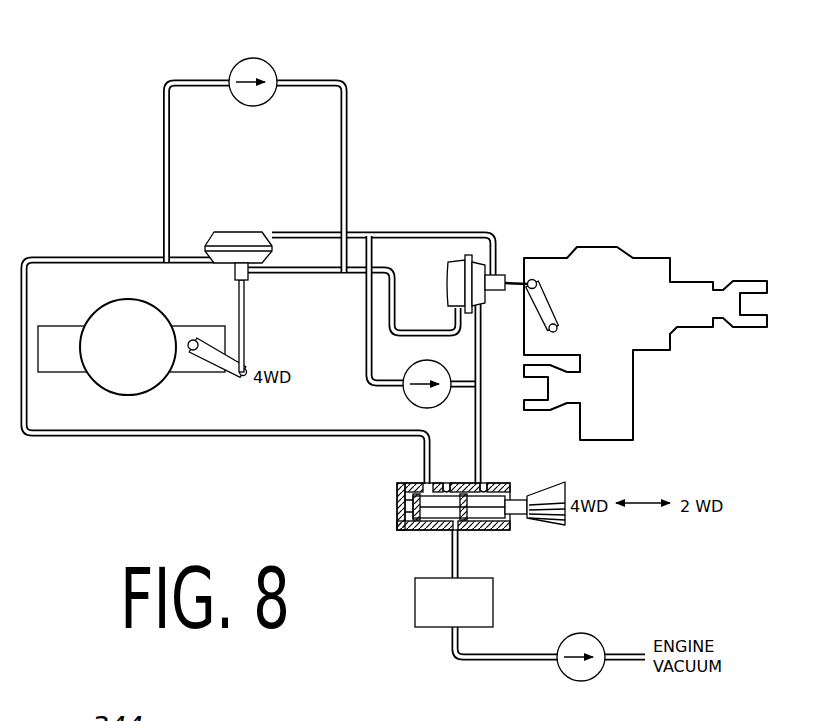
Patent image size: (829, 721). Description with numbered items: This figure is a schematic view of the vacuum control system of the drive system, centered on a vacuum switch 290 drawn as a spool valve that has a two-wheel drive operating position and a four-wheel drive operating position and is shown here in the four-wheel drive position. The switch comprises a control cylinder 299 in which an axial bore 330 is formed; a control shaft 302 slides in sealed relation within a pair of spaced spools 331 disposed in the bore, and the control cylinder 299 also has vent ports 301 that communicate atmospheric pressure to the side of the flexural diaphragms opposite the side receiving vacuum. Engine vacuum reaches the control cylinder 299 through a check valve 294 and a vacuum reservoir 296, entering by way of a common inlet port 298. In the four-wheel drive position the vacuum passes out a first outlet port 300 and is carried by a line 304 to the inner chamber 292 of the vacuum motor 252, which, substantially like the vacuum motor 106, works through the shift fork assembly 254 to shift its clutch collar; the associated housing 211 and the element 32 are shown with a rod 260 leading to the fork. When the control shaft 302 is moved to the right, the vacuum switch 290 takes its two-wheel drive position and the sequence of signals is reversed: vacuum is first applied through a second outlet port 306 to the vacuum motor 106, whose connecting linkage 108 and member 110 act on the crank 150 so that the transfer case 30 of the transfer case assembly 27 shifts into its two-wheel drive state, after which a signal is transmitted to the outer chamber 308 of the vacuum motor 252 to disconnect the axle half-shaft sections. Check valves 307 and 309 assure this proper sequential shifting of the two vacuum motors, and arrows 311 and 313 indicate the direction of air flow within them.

The transfer case assembly 27 is at (585, 176).
The transfer case 30 is at (622, 245).
The front axle disconnect 32 is at (138, 288).
The vacuum motor 106 is at (455, 258).
The connecting linkage 108 is at (514, 268).
The rod connector 110 is at (497, 291).
The crank 150 is at (549, 318).
The axle disconnect housing 211 is at (140, 190).
The vacuum motor 252 is at (246, 215).
The shift fork assembly 254 is at (236, 380).
The actuator rod 260 is at (247, 326).
The vacuum switch 290 is at (527, 528).
The inner chamber 292 is at (221, 265).
The check valve 294 is at (574, 681).
The vacuum reservoir 296 is at (487, 608).
The common inlet port 298 is at (455, 531).
The control cylinder 299 is at (401, 504).
The first outlet port 300 is at (472, 510).
The vent ports 301 is at (410, 528).
The control shaft 302 is at (521, 497).
The line 304 is at (211, 437).
The second outlet port 306 is at (484, 498).
The check valve 307 is at (418, 360).
The outer chamber 308 is at (220, 234).
The check valve 309 is at (241, 57).
The arrow 311 is at (408, 386).
The arrow 313 is at (272, 72).
The axial bore 330 is at (447, 488).
The spools 331 is at (407, 514).